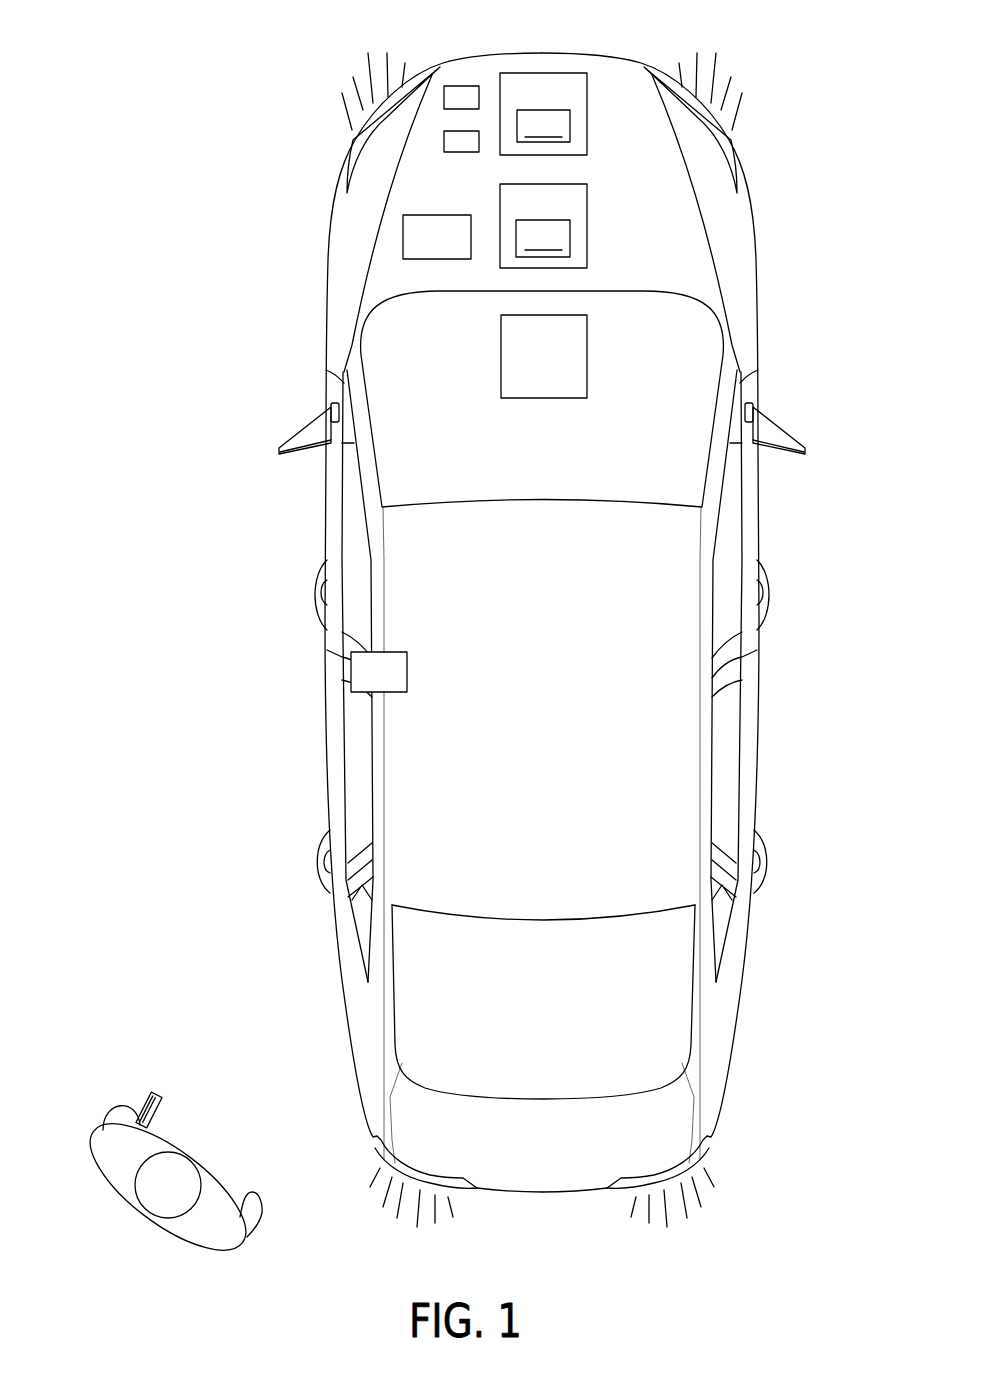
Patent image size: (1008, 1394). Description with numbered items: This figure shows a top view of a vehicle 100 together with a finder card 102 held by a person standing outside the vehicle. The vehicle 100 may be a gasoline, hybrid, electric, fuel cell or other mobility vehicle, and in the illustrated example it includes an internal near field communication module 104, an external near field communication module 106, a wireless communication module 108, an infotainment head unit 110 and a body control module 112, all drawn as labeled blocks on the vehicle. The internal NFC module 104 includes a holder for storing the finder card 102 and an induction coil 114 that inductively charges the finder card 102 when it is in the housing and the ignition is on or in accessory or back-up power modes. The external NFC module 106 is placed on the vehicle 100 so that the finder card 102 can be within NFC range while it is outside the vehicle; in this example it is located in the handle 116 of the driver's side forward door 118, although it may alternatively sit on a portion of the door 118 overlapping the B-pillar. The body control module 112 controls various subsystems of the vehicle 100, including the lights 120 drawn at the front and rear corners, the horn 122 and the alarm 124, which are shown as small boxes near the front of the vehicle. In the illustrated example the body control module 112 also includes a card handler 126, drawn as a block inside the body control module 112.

The vehicle 100 is at (757, 287).
The finder card 102 is at (147, 1090).
The internal near field communication module 104 is at (579, 226).
The external near field communication module 106 is at (407, 668).
The wireless communication module 108 is at (403, 237).
The infotainment head unit 110 is at (587, 355).
The body control module 112 is at (579, 114).
The induction coil 114 is at (587, 224).
The handle 116 is at (319, 593).
The driver's side forward door 118 is at (334, 503).
The lights 120 is at (353, 140).
The horn 122 is at (461, 86).
The alarm 124 is at (461, 152).
The card handler 126 is at (587, 113).